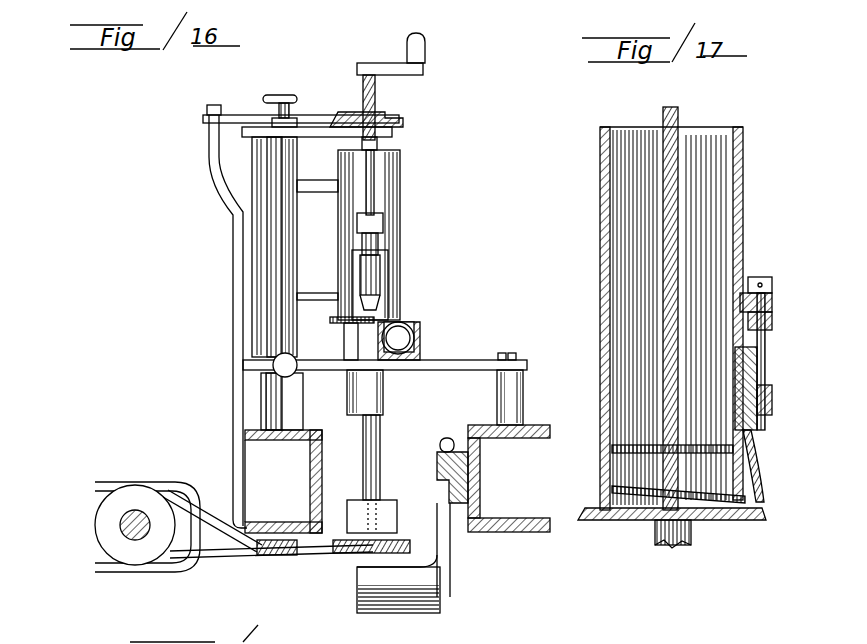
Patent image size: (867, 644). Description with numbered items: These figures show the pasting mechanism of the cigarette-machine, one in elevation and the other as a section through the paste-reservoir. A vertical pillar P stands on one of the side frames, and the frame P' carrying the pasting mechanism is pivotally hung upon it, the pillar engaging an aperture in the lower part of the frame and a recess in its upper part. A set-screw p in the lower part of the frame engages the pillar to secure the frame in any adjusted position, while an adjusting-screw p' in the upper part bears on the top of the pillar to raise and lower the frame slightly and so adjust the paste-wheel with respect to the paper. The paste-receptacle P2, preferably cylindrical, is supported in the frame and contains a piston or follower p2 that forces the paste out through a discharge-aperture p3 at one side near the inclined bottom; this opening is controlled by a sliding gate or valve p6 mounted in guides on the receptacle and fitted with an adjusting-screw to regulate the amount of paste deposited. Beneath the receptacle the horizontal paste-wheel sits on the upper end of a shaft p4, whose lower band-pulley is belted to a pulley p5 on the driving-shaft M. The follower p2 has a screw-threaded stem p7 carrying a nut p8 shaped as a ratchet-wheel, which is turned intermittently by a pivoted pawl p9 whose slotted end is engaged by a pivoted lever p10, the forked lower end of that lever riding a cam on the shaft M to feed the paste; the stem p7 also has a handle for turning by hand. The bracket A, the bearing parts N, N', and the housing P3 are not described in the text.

In FIG. 16, the adjusting-screw p' is at (275, 96).
In FIG. 16, the pivoted pawl p9 is at (308, 114).
In FIG. 16, the screw-threaded stem p7 is at (377, 101).
In FIG. 17, the screw-threaded stem p7 is at (665, 110).
In FIG. 16, the nut p8 is at (395, 123).
In FIG. 17, the nut p8 is at (613, 525).
In FIG. 16, the pivoted lever p10 is at (217, 153).
In FIG. 16, the vertical pillar P is at (236, 247).
In FIG. 16, the paste-receptacle P2 is at (398, 204).
In FIG. 17, the paste-receptacle P2 is at (603, 274).
In FIG. 16, the frame P' is at (234, 283).
In FIG. 16, the set-screw p is at (242, 379).
In FIG. 16, the sliding gate or valve p6 is at (381, 287).
In FIG. 17, the sliding gate or valve p6 is at (766, 363).
In FIG. 16, the bearing housing P3 is at (403, 322).
In FIG. 16, the bearing ring N' is at (433, 323).
In FIG. 16, the ball bearing N is at (430, 333).
In FIG. 16, the shaft p4 is at (367, 357).
In FIG. 17, the shaft p4 is at (692, 544).
In FIG. 16, the frame bracket A is at (493, 511).
In FIG. 16, the driving-shaft M is at (120, 528).
In FIG. 16, the pulley p5 is at (133, 557).
In FIG. 17, the piston or follower p2 is at (620, 445).
In FIG. 17, the discharge-aperture p3 is at (757, 502).